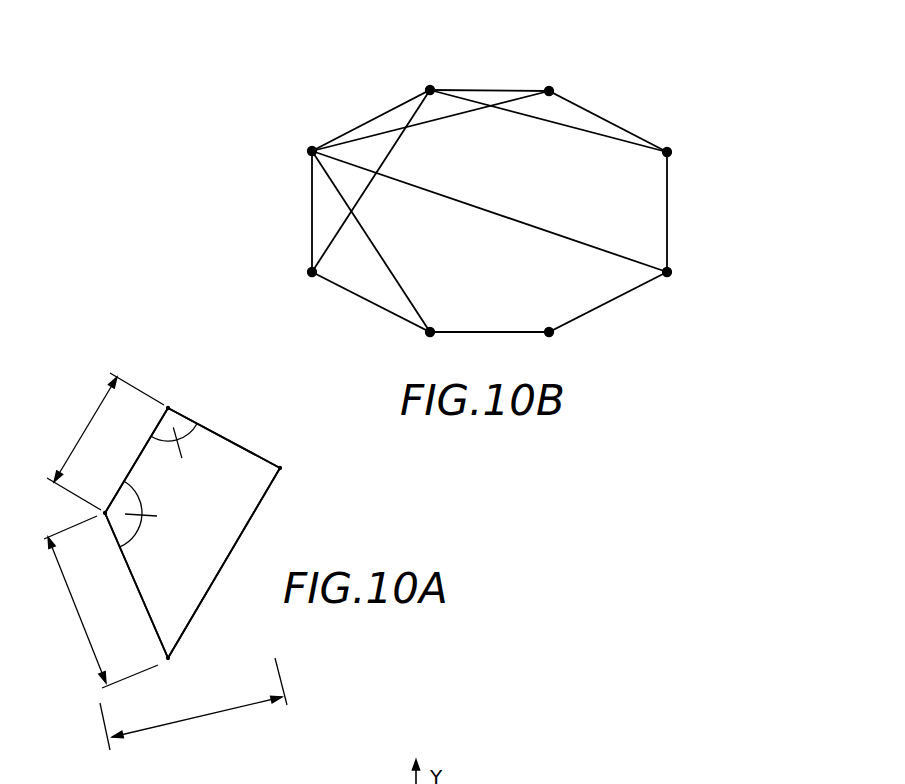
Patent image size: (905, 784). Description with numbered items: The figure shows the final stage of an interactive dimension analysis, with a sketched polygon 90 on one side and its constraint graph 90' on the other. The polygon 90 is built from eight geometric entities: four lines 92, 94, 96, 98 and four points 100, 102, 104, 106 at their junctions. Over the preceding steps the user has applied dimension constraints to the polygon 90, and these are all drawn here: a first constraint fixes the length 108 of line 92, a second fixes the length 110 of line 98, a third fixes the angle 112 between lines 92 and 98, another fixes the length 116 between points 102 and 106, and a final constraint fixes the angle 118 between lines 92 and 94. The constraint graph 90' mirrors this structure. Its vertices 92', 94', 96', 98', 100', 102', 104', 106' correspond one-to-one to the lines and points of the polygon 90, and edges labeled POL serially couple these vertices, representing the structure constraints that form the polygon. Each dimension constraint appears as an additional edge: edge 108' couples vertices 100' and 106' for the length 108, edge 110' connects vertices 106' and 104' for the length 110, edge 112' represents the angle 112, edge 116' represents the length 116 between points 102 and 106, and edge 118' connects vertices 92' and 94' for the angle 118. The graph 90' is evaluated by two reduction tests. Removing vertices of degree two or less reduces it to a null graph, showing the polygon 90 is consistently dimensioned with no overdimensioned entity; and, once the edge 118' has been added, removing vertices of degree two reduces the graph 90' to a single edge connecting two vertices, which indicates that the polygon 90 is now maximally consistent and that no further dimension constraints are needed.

In FIG. 10A, the polygon 90 is at (192, 508).
In FIG. 10A, the line 92 is at (136, 460).
In FIG. 10A, the line 94 is at (224, 447).
In FIG. 10A, the line 96 is at (224, 563).
In FIG. 10A, the line 98 is at (141, 585).
In FIG. 10A, the point 100 is at (185, 384).
In FIG. 10A, the point 102 is at (305, 487).
In FIG. 10A, the point 104 is at (200, 659).
In FIG. 10A, the point 106 is at (90, 545).
In FIG. 10A, the length 108 is at (104, 441).
In FIG. 10A, the length 110 is at (99, 602).
In FIG. 10A, the angle 112 is at (166, 514).
In FIG. 10A, the length 116 is at (193, 705).
In FIG. 10A, the angle 118 is at (174, 461).
In FIG. 10B, the constraint graph 90' is at (486, 189).
In FIG. 10B, the vertex 92' is at (448, 64).
In FIG. 10B, the vertex 94' is at (691, 129).
In FIG. 10B, the vertex 96' is at (580, 351).
In FIG. 10B, the vertex 98' is at (296, 298).
In FIG. 10B, the vertex 100' is at (583, 73).
In FIG. 10B, the vertex 102' is at (698, 292).
In FIG. 10B, the vertex 104' is at (399, 351).
In FIG. 10B, the vertex 106' is at (284, 132).
In FIG. 10B, the edge 108' is at (430, 127).
In FIG. 10B, the edge 110' is at (385, 241).
In FIG. 10B, the edge 112' is at (372, 181).
In FIG. 10B, the edge 116' is at (489, 211).
In FIG. 10B, the edge 118' is at (548, 126).